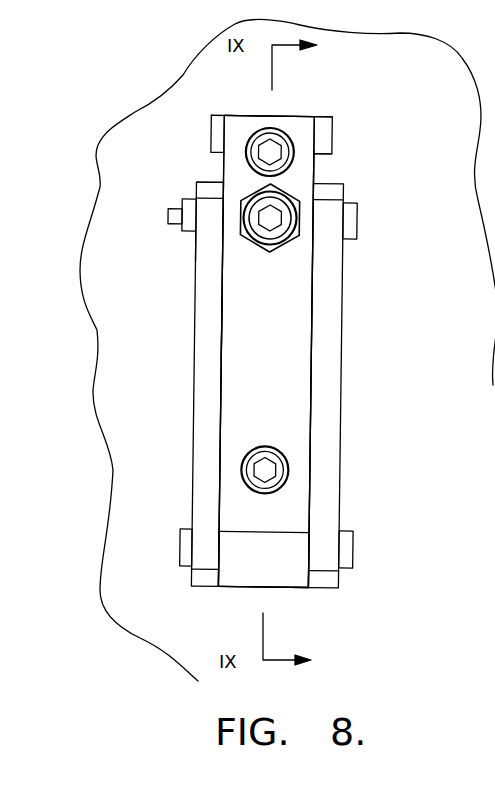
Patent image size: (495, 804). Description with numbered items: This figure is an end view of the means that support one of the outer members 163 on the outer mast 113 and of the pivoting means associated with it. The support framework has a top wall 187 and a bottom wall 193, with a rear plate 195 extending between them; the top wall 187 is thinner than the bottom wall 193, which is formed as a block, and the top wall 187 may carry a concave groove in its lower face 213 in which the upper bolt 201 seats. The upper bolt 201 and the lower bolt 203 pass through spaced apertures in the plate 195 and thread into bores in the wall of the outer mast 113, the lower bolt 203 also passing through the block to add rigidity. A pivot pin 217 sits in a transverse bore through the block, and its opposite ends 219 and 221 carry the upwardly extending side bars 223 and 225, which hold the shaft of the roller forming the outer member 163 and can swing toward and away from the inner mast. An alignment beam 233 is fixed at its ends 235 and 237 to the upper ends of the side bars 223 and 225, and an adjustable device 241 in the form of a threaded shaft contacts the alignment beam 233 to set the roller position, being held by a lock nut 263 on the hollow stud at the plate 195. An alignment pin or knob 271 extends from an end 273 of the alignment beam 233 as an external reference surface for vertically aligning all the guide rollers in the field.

The outer mast 113 is at (135, 113).
The outer member 163 is at (362, 300).
The top wall 187 is at (329, 129).
The bottom wall 193 is at (270, 573).
The rear wall or plate 195 is at (300, 350).
The upper bolt 201 is at (278, 139).
The lower bolt 203 is at (288, 468).
The lower face 213 is at (318, 154).
The pivot pin 217 is at (343, 533).
The end of pivot pin 219 is at (178, 543).
The end of pivot pin 221 is at (355, 557).
The side bar 223 is at (203, 380).
The side bar 225 is at (328, 380).
The alignment beam 233 is at (188, 236).
The end of alignment beam 235 is at (185, 207).
The end of alignment beam 237 is at (345, 200).
The adjustable device 241 is at (260, 271).
The lock nut 263 is at (272, 228).
The alignment pin or knob 271 is at (180, 210).
The end of alignment beam 273 is at (184, 236).